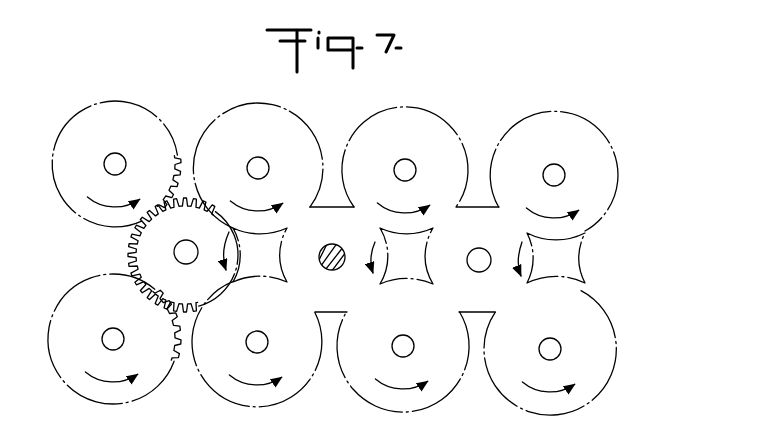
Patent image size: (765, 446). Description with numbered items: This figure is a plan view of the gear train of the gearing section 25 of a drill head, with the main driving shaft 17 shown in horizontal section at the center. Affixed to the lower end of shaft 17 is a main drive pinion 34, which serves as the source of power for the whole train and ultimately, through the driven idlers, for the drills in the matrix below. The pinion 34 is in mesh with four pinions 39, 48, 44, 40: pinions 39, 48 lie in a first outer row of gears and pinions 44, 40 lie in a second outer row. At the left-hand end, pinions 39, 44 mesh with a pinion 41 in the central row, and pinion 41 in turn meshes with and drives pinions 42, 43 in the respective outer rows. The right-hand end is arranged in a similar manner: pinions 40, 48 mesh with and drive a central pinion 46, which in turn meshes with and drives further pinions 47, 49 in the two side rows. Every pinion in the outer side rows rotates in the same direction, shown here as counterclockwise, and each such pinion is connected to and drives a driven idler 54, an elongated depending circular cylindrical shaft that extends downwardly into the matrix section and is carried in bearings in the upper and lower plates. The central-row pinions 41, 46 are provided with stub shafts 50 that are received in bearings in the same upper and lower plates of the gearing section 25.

The gearing section 25 is at (481, 101).
The pinion 43 is at (149, 118).
The pinion 39 is at (302, 122).
The pinion 48 is at (440, 127).
The pinion 47 is at (597, 132).
The pinion 42 is at (108, 397).
The pinion 44 is at (253, 403).
The pinion 40 is at (395, 405).
The pinion 49 is at (598, 312).
The driven idler 54 is at (122, 145).
The stub shaft 50 is at (195, 232).
The pinion 41 is at (136, 251).
The main drive pinion 34 is at (283, 263).
The main driving shaft 17 is at (332, 244).
The pinion 46 is at (535, 262).